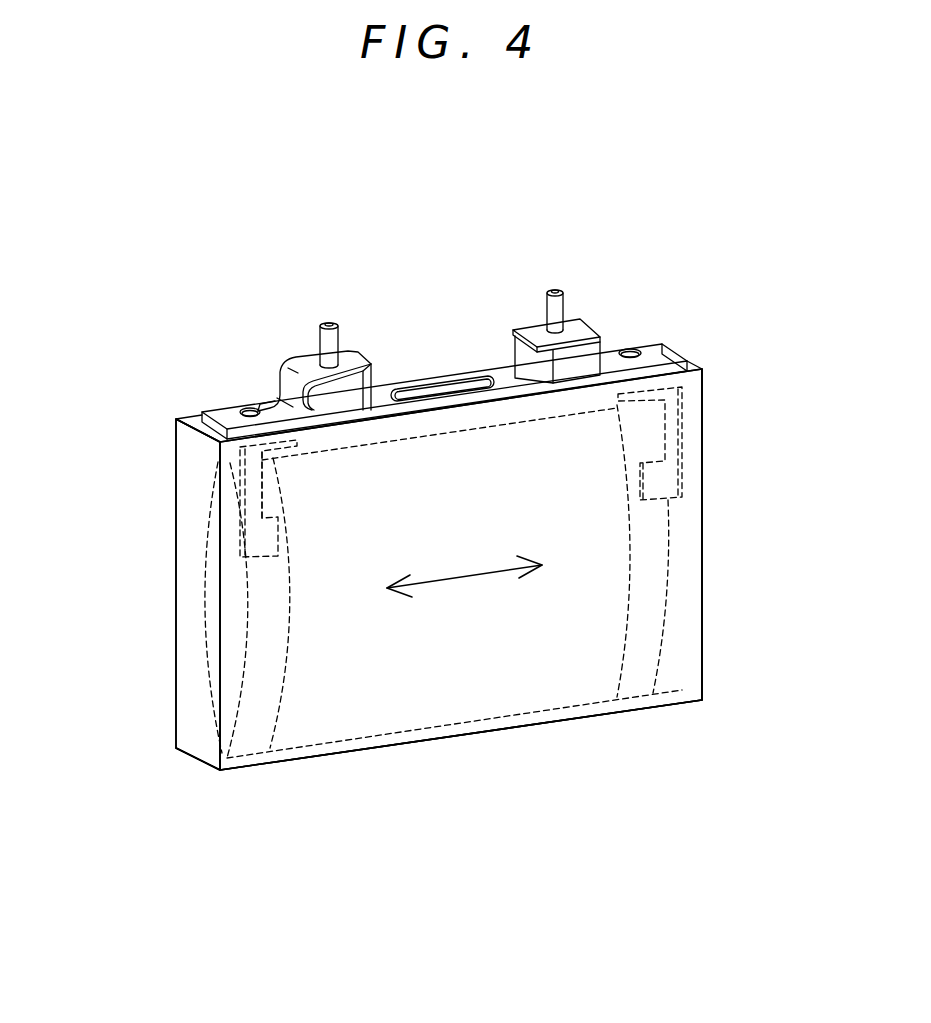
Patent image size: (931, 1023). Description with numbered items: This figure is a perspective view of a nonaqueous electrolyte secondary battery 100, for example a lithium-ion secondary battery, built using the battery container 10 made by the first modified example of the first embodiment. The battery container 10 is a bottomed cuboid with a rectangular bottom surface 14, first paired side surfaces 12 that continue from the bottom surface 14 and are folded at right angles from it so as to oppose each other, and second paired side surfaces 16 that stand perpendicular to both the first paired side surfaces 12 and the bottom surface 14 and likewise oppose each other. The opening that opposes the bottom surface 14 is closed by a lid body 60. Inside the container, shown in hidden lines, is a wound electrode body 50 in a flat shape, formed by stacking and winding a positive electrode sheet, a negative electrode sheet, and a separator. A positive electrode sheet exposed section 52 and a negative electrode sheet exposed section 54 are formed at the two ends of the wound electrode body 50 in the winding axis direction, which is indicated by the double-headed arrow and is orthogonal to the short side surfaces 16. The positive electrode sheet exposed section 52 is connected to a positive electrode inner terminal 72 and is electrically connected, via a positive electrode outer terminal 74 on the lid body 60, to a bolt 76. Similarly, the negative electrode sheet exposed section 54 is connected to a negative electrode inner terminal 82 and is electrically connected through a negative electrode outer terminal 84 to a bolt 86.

The nonaqueous electrolyte secondary battery 100 is at (135, 297).
The battery container 10 is at (704, 378).
The first paired side surfaces 12 is at (517, 633).
The bottom surface 14 is at (492, 732).
The second paired side surfaces 16 is at (703, 560).
The wound electrode body 50 is at (398, 735).
The positive electrode sheet exposed section 52 is at (257, 733).
The negative electrode sheet exposed section 54 is at (638, 678).
The lid body 60 is at (195, 422).
The positive electrode inner terminal 72 is at (236, 524).
The positive electrode outer terminal 74 is at (305, 362).
The bolt 76 is at (327, 321).
The negative electrode inner terminal 82 is at (682, 475).
The negative electrode outer terminal 84 is at (535, 340).
The bolt 86 is at (556, 290).